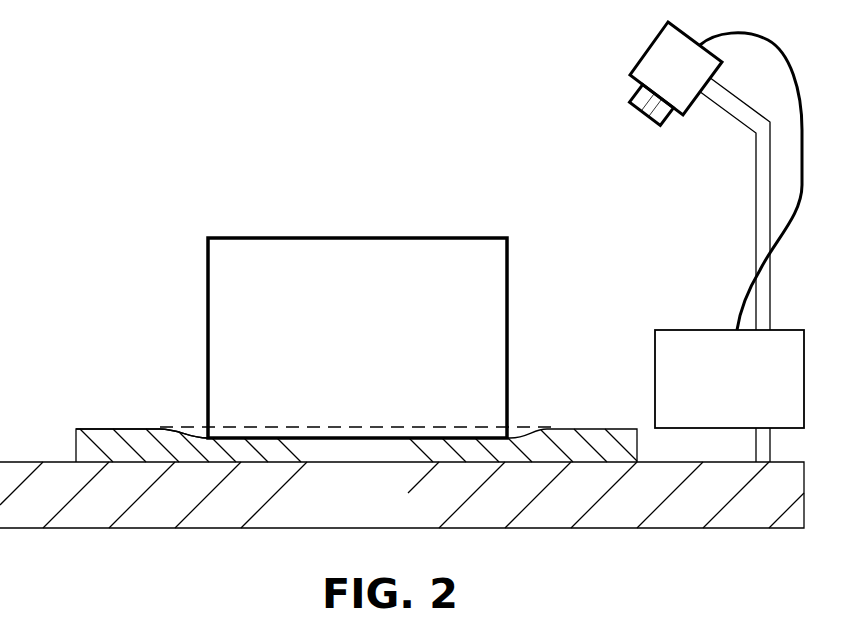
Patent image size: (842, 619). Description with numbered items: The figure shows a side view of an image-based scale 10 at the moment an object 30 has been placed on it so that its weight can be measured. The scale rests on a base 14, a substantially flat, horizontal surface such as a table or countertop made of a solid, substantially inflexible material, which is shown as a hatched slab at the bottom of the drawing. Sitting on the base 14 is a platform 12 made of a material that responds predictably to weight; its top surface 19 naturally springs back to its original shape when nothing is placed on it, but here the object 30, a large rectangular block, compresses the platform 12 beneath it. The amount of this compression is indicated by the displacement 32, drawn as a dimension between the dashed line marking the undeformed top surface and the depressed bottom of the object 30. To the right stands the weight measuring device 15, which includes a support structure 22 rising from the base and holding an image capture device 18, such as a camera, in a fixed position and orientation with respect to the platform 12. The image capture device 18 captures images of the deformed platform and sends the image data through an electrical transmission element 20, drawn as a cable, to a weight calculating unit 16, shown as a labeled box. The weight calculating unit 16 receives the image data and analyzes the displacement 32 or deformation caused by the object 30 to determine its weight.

The image-based scale 10 is at (124, 186).
The platform 12 is at (87, 424).
The base 14 is at (208, 528).
The weight measuring device 15 is at (653, 211).
The weight calculating unit 16 is at (655, 362).
The image capture device 18 is at (645, 55).
The top surface 19 is at (128, 428).
The electrical transmission element 20 is at (738, 303).
The support structure 22 is at (755, 198).
The object 30 is at (399, 237).
The displacement 32 is at (353, 495).